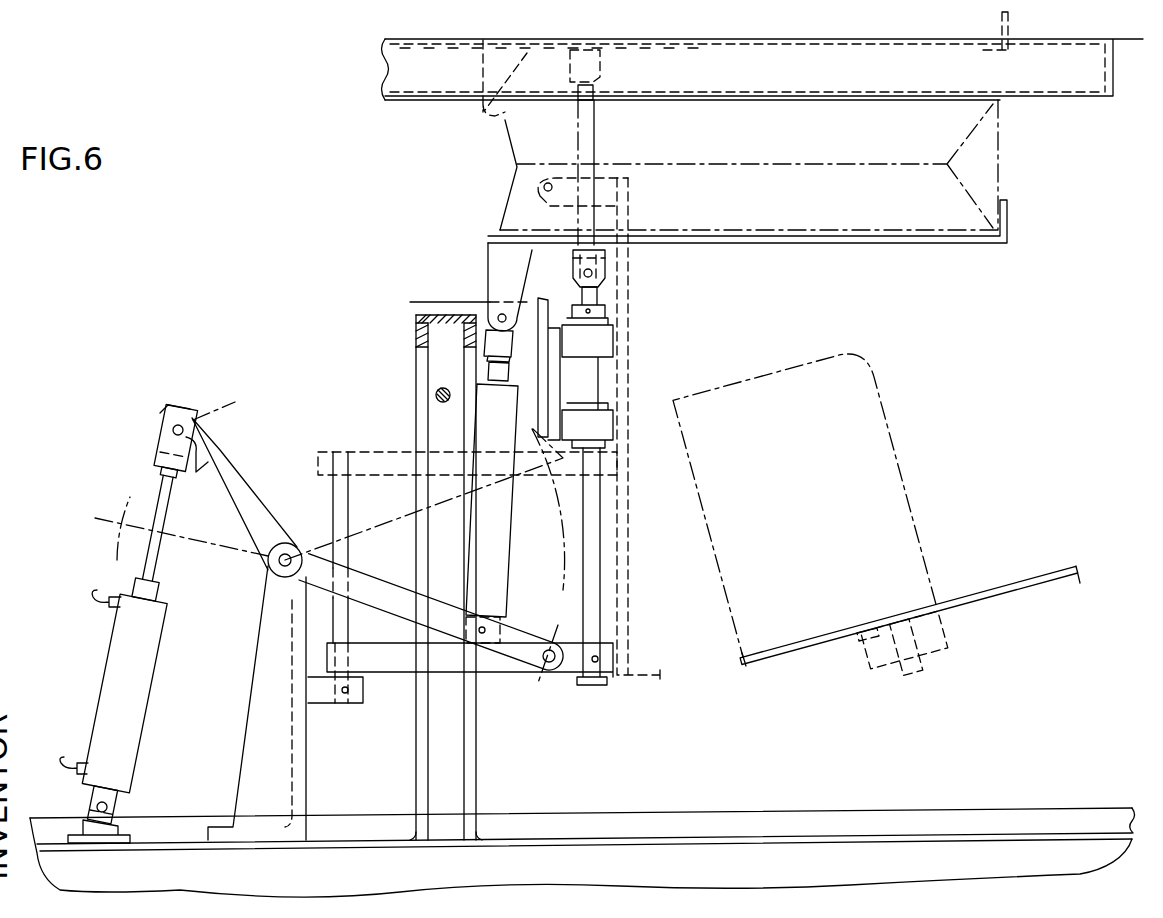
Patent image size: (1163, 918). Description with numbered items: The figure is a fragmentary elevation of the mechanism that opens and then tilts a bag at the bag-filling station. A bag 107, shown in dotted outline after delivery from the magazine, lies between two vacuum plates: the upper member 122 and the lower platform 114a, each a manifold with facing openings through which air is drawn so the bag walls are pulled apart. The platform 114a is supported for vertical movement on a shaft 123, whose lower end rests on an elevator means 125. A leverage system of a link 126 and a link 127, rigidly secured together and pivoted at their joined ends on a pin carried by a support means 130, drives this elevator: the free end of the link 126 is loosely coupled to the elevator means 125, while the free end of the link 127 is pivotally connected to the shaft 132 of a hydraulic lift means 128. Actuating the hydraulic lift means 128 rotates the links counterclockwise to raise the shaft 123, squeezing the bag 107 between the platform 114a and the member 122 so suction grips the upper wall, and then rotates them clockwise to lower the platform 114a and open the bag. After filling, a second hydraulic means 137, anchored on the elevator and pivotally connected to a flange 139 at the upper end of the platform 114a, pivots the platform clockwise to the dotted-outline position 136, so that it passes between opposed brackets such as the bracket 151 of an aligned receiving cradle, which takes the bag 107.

The bag 107 is at (908, 100).
The upper member 122 is at (1010, 97).
The platform 114a is at (857, 245).
The flange 139 is at (498, 276).
The tilted position of member 114A 136 is at (632, 308).
The shaft 123 is at (593, 553).
The elevator means 125 is at (497, 664).
The link 126 is at (383, 590).
The support means 130 is at (258, 735).
The link 127 is at (240, 492).
The shaft of the hydraulic means 132 is at (155, 498).
The hydraulic lift means 128 is at (113, 697).
The hydraulic means 137 is at (497, 567).
The bracket 151 is at (878, 458).